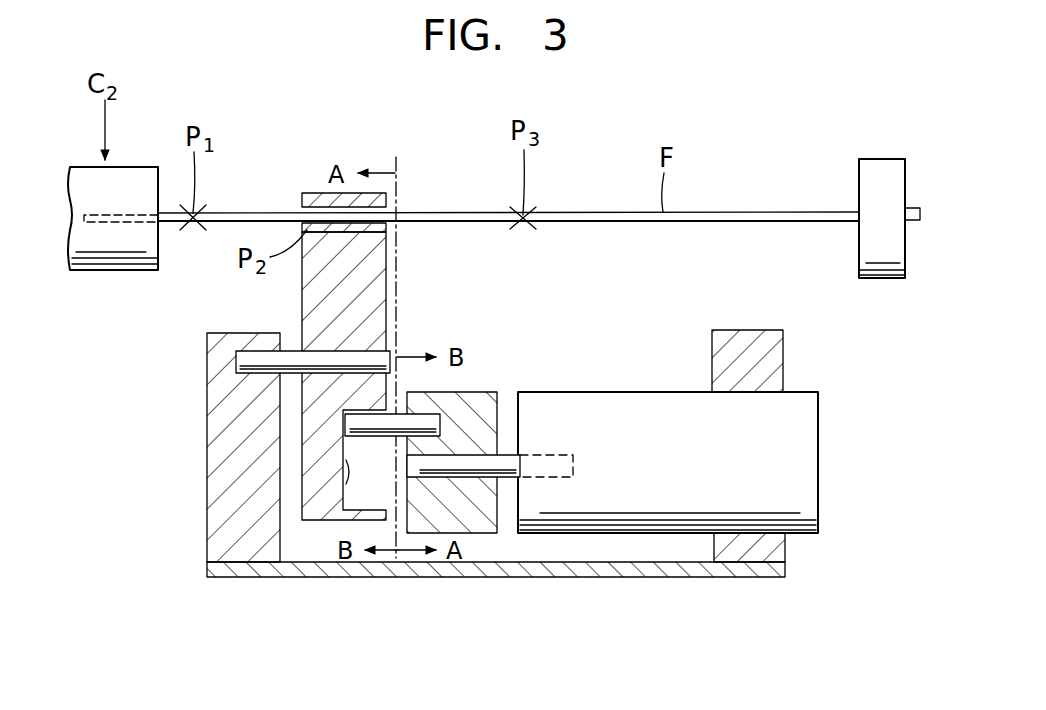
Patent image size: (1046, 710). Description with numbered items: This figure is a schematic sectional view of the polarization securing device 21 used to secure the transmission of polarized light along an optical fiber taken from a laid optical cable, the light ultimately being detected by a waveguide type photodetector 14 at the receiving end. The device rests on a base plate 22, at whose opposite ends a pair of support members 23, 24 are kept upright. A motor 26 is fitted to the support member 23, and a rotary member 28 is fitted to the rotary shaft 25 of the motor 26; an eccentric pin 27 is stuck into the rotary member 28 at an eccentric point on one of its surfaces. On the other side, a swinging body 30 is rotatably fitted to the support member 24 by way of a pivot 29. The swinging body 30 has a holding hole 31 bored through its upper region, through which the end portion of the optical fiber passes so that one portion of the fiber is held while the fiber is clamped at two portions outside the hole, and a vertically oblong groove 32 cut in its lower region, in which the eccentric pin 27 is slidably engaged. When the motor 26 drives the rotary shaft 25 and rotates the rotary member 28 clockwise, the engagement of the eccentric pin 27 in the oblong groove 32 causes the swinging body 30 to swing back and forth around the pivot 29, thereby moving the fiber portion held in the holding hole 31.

The waveguide type photodetector 14 is at (881, 165).
The polarization securing device 21 is at (160, 481).
The base plate 22 is at (509, 578).
The support member 23 is at (773, 357).
The support member 24 is at (219, 540).
The rotary shaft 25 is at (505, 462).
The motor 26 is at (803, 455).
The eccentric pin 27 is at (346, 425).
The rotary member 28 is at (484, 392).
The pivot 29 is at (238, 361).
The swinging body 30 is at (303, 305).
The holding hole 31 is at (312, 205).
The oblong groove 32 is at (325, 512).